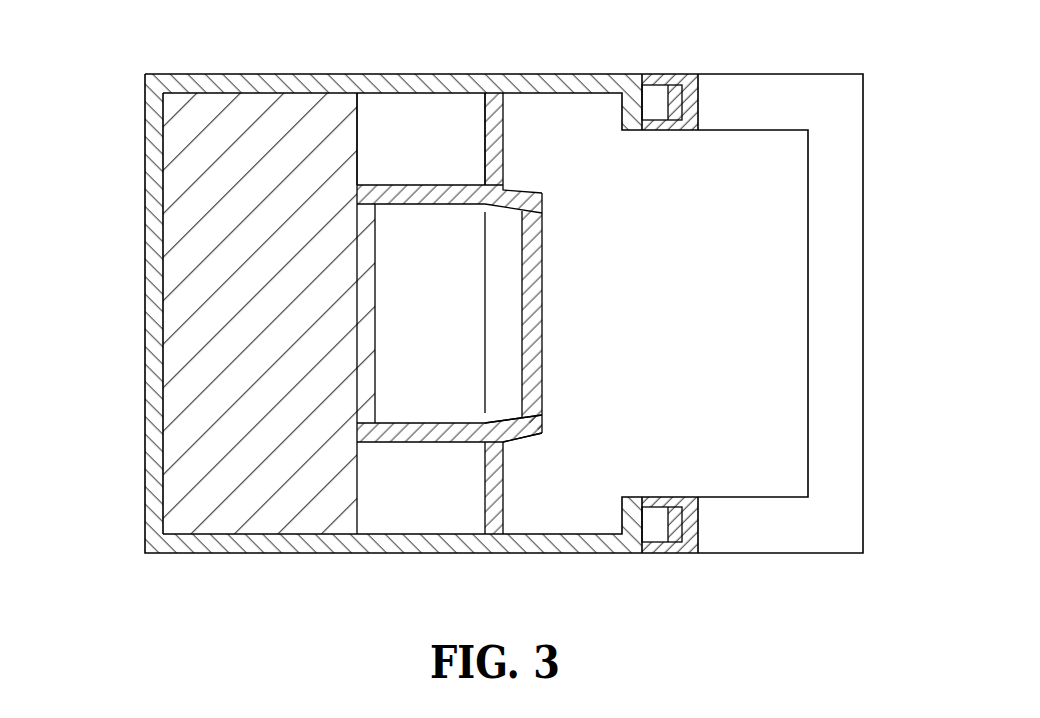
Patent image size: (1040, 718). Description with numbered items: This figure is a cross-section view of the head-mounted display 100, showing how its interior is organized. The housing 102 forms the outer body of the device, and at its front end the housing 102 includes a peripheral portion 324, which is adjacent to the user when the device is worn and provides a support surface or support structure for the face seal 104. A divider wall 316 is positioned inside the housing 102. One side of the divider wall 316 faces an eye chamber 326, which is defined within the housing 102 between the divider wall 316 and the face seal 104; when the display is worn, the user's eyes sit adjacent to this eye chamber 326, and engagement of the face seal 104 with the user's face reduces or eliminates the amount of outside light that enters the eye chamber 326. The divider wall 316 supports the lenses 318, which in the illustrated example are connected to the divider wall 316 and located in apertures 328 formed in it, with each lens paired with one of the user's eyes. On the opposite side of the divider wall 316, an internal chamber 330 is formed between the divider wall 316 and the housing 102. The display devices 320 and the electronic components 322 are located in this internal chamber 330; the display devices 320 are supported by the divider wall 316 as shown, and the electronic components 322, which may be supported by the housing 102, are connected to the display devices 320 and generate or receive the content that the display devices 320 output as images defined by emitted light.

The head-mounted display 100 is at (119, 49).
The housing 102 is at (265, 74).
The face seal 104 is at (805, 74).
The divider wall 316 is at (505, 131).
The lenses 318 is at (542, 266).
The display devices 320 is at (375, 259).
The electronic components 322 is at (187, 321).
The peripheral portion 324 is at (640, 112).
The eye chamber 326 is at (752, 222).
The apertures 328 is at (542, 432).
The internal chamber 330 is at (446, 130).